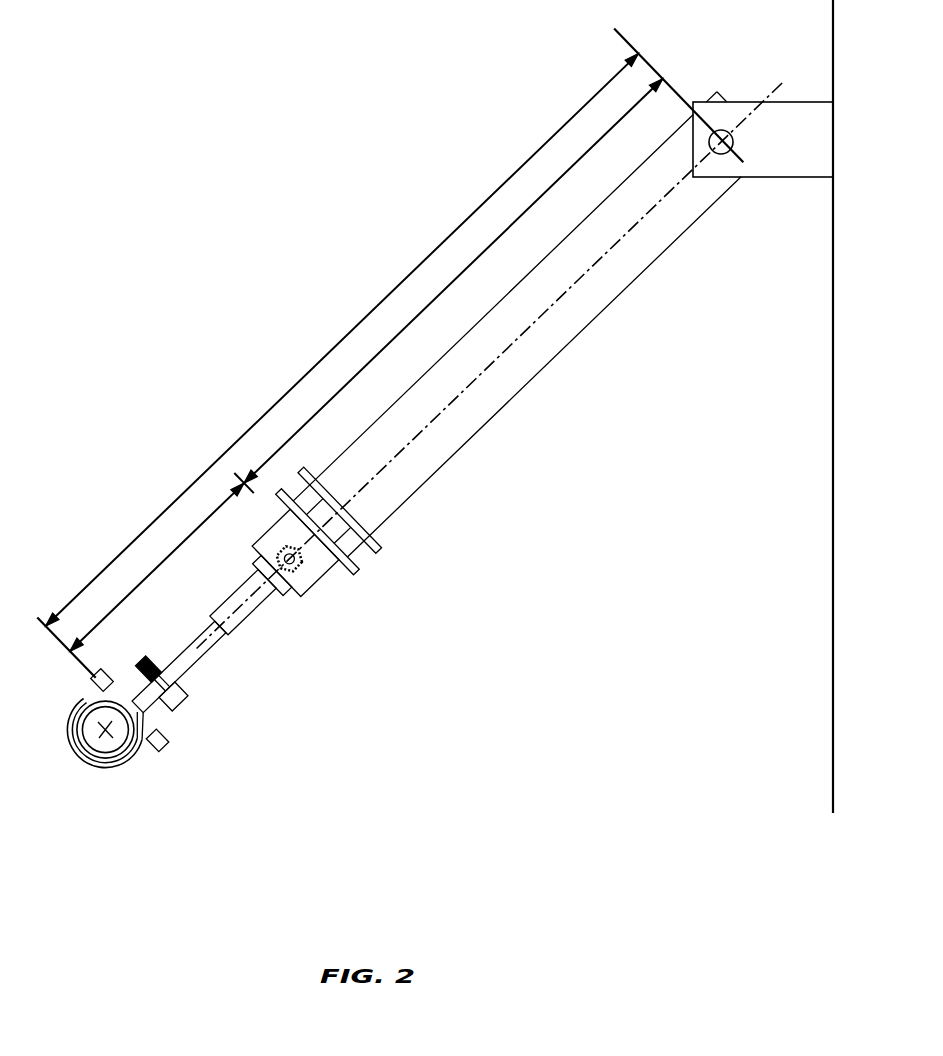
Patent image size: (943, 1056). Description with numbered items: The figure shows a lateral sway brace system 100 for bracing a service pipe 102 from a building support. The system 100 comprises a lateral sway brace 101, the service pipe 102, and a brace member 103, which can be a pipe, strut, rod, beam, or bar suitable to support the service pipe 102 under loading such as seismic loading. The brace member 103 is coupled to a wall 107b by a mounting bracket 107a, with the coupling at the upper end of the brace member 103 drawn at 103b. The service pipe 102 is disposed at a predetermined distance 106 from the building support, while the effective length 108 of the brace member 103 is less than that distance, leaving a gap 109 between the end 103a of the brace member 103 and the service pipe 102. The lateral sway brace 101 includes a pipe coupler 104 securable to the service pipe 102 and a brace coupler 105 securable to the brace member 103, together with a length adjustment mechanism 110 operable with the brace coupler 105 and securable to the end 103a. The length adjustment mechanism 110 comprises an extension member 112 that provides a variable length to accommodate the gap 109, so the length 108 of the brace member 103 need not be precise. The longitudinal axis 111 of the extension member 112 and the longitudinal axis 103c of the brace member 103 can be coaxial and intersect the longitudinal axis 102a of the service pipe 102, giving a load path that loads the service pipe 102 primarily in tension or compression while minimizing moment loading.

The lateral sway brace system 100 is at (293, 186).
The lateral sway brace 101 is at (293, 667).
The service pipe 102 is at (128, 745).
The longitudinal axis of the service pipe 102a is at (112, 740).
The brace member 103 is at (512, 396).
The end of the brace member 103a is at (393, 557).
The tube pivot connection 103b is at (757, 187).
The longitudinal axis of the brace member 103c is at (596, 264).
The pipe coupler 104 is at (194, 733).
The brace coupler 105 is at (352, 588).
The predetermined distance 106 is at (372, 312).
The mounting bracket 107a is at (797, 102).
The wall 107b is at (833, 278).
The effective length of the brace member 108 is at (462, 268).
The gap 109 is at (150, 573).
The length adjustment mechanism 110 is at (273, 604).
The longitudinal axis of the extension member 111 is at (183, 657).
The extension member 112 is at (255, 607).